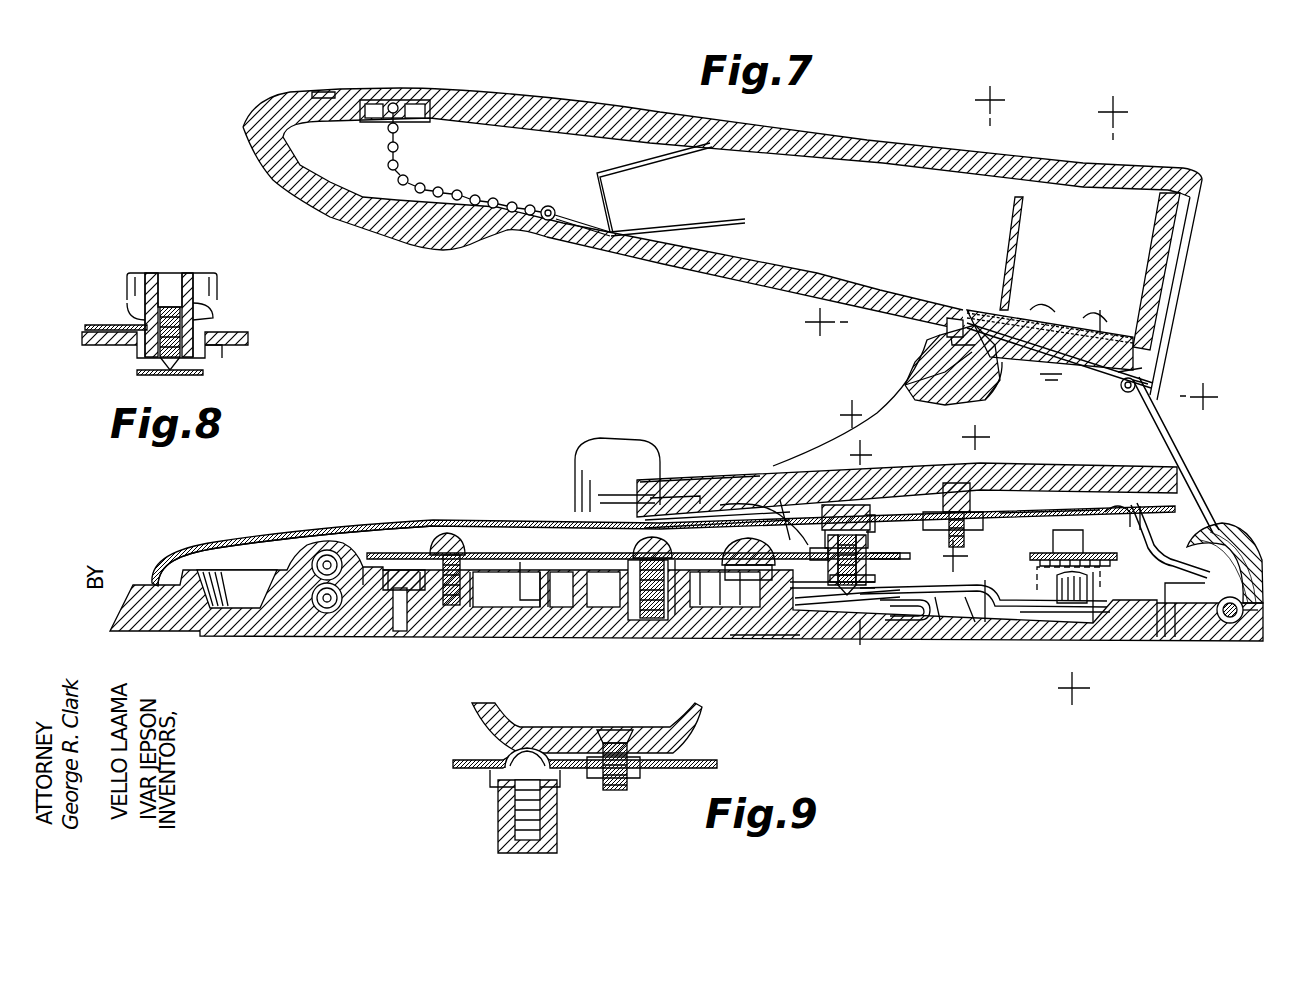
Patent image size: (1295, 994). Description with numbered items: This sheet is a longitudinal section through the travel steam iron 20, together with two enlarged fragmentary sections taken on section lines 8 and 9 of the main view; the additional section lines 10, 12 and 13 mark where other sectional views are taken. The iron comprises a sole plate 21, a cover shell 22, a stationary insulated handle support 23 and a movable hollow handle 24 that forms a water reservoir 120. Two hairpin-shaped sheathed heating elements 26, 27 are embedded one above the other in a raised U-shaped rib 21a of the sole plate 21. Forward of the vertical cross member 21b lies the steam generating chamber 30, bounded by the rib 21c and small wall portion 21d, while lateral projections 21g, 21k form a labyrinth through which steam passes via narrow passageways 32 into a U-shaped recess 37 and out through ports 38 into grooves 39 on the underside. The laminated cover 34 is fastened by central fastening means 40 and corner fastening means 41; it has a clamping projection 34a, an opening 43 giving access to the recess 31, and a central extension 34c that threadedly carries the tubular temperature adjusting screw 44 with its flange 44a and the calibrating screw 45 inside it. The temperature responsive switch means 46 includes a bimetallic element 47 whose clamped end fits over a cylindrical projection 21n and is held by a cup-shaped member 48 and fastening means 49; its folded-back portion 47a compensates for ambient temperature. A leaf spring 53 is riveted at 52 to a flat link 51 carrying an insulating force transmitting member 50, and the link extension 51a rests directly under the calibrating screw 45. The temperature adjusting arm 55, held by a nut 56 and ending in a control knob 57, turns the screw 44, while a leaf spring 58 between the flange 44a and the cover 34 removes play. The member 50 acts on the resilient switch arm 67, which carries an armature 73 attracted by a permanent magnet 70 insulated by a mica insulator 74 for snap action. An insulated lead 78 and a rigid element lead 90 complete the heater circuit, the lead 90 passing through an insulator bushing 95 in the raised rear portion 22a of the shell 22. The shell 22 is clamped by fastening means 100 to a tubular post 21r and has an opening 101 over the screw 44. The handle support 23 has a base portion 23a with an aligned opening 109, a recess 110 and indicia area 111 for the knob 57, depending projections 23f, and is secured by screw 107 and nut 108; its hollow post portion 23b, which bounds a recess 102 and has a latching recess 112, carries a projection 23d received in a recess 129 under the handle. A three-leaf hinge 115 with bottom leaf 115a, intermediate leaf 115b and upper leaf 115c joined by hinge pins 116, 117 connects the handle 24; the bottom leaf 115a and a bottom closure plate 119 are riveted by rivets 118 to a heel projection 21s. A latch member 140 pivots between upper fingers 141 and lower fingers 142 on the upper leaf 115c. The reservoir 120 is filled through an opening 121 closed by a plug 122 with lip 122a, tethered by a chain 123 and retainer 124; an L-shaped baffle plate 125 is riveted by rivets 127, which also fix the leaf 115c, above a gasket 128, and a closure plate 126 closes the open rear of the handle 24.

In FIG. 7, the travel steam iron 20 is at (446, 667).
In FIG. 7, the sole plate 21 is at (750, 638).
In FIG. 7, the raised integral U-shaped rib 21a is at (318, 540).
In FIG. 7, the vertical wall portion or cross member 21b is at (610, 594).
In FIG. 7, the U-shaped rib 21c is at (373, 552).
In FIG. 7, the small raised U-shaped wall portion 21d is at (516, 560).
In FIG. 7, the lateral projection 21g is at (536, 592).
In FIG. 7, the lateral projection 21k is at (566, 592).
In FIG. 7, the cylindrical projection 21n is at (736, 612).
In FIG. 7, the upstanding tubular post 21r is at (1056, 526).
In FIG. 9, the upstanding tubular post 21r is at (560, 818).
In FIG. 7, the rearward heel projection 21s is at (1160, 641).
In FIG. 7, the cover shell 22 is at (426, 518).
In FIG. 7, the raised rear portion of cover shell 22a is at (1072, 506).
In FIG. 9, the raised rear portion of cover shell 22a is at (718, 762).
In FIG. 7, the handle support member 23 is at (756, 470).
In FIG. 7, the base portion of handle support 23a is at (756, 456).
In FIG. 7, the hollow side post portion 23b is at (876, 408).
In FIG. 7, the upwardly directed projection 23d is at (1068, 320).
In FIG. 7, the depending projections 23f is at (1140, 500).
In FIG. 7, the movable handle and reservoir member 24 is at (824, 140).
In FIG. 7, the sheathed heating element 26 is at (322, 614).
In FIG. 7, the sheathed heating element 27 is at (332, 548).
In FIG. 7, the steam generating chamber 30 is at (503, 594).
In FIG. 7, the recess 31 is at (674, 622).
In FIG. 7, the narrow passageway 32 is at (542, 570).
In FIG. 7, the steam generating chamber cover 34 is at (508, 552).
In FIG. 8, the steam generating chamber cover 34 is at (94, 346).
In FIG. 7, the clamping projection 34a is at (912, 552).
In FIG. 7, the central extension of cover 34c is at (878, 600).
In FIG. 8, the central extension of cover 34c is at (240, 346).
In FIG. 7, the U-shaped recess 37 is at (401, 568).
In FIG. 7, the ports 38 is at (396, 620).
In FIG. 7, the grooves 39 is at (243, 637).
In FIG. 7, the fastening means 40 is at (648, 622).
In FIG. 7, the fastening means 41 is at (450, 532).
In FIG. 7, the opening 43 is at (716, 500).
In FIG. 7, the temperature adjusting screw 44 is at (866, 540).
In FIG. 8, the temperature adjusting screw 44 is at (191, 275).
In FIG. 8, the peripheral flange 44a is at (215, 306).
In FIG. 7, the calibrating screw 45 is at (852, 532).
In FIG. 8, the calibrating screw 45 is at (170, 305).
In FIG. 7, the temperature responsive switch means 46 is at (945, 623).
In FIG. 7, the bimetallic element 47 is at (846, 608).
In FIG. 7, the folded back portion 47a is at (920, 622).
In FIG. 7, the cup-shaped member 48 is at (766, 585).
In FIG. 7, the fastening means 49 is at (704, 610).
In FIG. 7, the force transmitting insulating member 50 is at (1060, 604).
In FIG. 7, the flat link member 51 is at (998, 625).
In FIG. 7, the link extension 51a is at (818, 592).
In FIG. 8, the link extension 51a is at (204, 376).
In FIG. 7, the rivet connection 52 is at (935, 606).
In FIG. 7, the leaf spring 53 is at (974, 625).
In FIG. 7, the temperature adjusting arm 55 is at (822, 535).
In FIG. 8, the temperature adjusting arm 55 is at (128, 302).
In FIG. 7, the nut 56 is at (824, 502).
In FIG. 8, the nut 56 is at (217, 284).
In FIG. 7, the control knob 57 is at (613, 440).
In FIG. 7, the leaf spring member 58 is at (812, 562).
In FIG. 8, the leaf spring member 58 is at (110, 322).
In FIG. 7, the resilient switch arm 67 is at (1098, 563).
In FIG. 7, the permanent magnet 70 is at (1103, 606).
In FIG. 7, the armature 73 is at (1076, 552).
In FIG. 7, the magnet insulator 74 is at (1030, 650).
In FIG. 7, the insulated lead 78 is at (1230, 542).
In FIG. 7, the rigid element lead 90 is at (1173, 530).
In FIG. 7, the insulator bushing 95 is at (1036, 572).
In FIG. 9, the fastening means 100 is at (510, 758).
In FIG. 7, the opening 101 is at (782, 496).
In FIG. 7, the recess 102 is at (1176, 442).
In FIG. 9, the recess 102 is at (698, 728).
In FIG. 7, the screw 107 is at (970, 484).
In FIG. 9, the screw 107 is at (607, 740).
In FIG. 7, the nut 108 is at (983, 518).
In FIG. 9, the nut 108 is at (641, 777).
In FIG. 7, the opening 109 is at (866, 512).
In FIG. 7, the recess 110 is at (666, 480).
In FIG. 7, the arcuate indicia area 111 is at (686, 494).
In FIG. 7, the latching recess 112 is at (912, 394).
In FIG. 7, the three leaf hinge 115 is at (1150, 390).
In FIG. 7, the bottom hinge leaf 115a is at (1205, 622).
In FIG. 7, the intermediate hinge leaf 115b is at (1185, 487).
In FIG. 7, the upper hinge leaf 115c is at (1058, 383).
In FIG. 7, the hinge pin 116 is at (1238, 624).
In FIG. 7, the hinge pin 117 is at (1121, 392).
In FIG. 7, the rivets 118 is at (1187, 646).
In FIG. 7, the bottom closure plate 119 is at (1246, 642).
In FIG. 7, the reservoir 120 is at (830, 223).
In FIG. 7, the filling opening 121 is at (405, 118).
In FIG. 7, the closure plug 122 is at (395, 92).
In FIG. 7, the lip portion 122a is at (320, 90).
In FIG. 7, the flexible chain 123 is at (464, 200).
In FIG. 7, the retainer 124 is at (621, 174).
In FIG. 7, the L-shaped baffle plate 125 is at (1020, 222).
In FIG. 7, the closure plate 126 is at (1172, 268).
In FIG. 7, the rivets 127 is at (1045, 306).
In FIG. 7, the gasket 128 is at (980, 306).
In FIG. 7, the recess 129 is at (1098, 306).
In FIG. 7, the latch member 140 is at (930, 360).
In FIG. 7, the upper projecting fingers 141 is at (960, 316).
In FIG. 7, the lower fingers 142 is at (998, 381).
In FIG. 7, the section line 8— 8 is at (861, 550).
In FIG. 7, the section line 9— 9 is at (965, 498).
In FIG. 7, the section line 10 is at (1102, 406).
In FIG. 7, the section line 12 is at (926, 251).
In FIG. 7, the section line 13 is at (1012, 359).